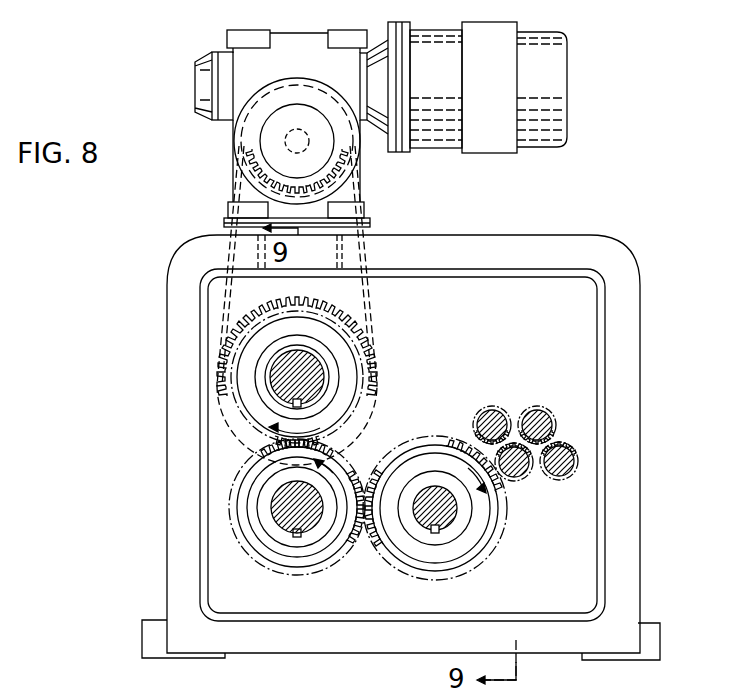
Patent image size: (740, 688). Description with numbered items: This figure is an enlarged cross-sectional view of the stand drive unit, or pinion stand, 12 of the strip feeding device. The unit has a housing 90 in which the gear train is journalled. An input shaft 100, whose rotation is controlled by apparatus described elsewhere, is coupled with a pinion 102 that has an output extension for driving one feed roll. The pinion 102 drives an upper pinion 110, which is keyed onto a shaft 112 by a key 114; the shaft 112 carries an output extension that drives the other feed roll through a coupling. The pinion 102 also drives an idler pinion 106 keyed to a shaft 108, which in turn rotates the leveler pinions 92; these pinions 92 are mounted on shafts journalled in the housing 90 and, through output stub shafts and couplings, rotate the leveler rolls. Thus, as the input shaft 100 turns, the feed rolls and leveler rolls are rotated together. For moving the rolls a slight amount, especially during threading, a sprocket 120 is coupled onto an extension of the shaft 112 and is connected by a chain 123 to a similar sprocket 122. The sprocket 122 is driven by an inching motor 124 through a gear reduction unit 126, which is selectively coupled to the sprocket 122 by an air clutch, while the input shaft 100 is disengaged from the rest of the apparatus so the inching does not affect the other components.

The stand drive unit 12 is at (597, 224).
The housing 90 is at (500, 243).
The leveler pinions 92 is at (503, 413).
The input shaft 100 is at (313, 497).
The pinion 102 is at (320, 556).
The idler pinion 106 is at (377, 538).
The shaft 108 is at (453, 515).
The upper pinion 110 is at (268, 432).
The shaft 112 is at (318, 372).
The key 114 is at (303, 403).
The sprocket 120 is at (228, 372).
The sprocket 122 is at (360, 176).
The chain 123 is at (376, 230).
The inching motor 124 is at (542, 40).
The gear reduction unit 126 is at (309, 33).